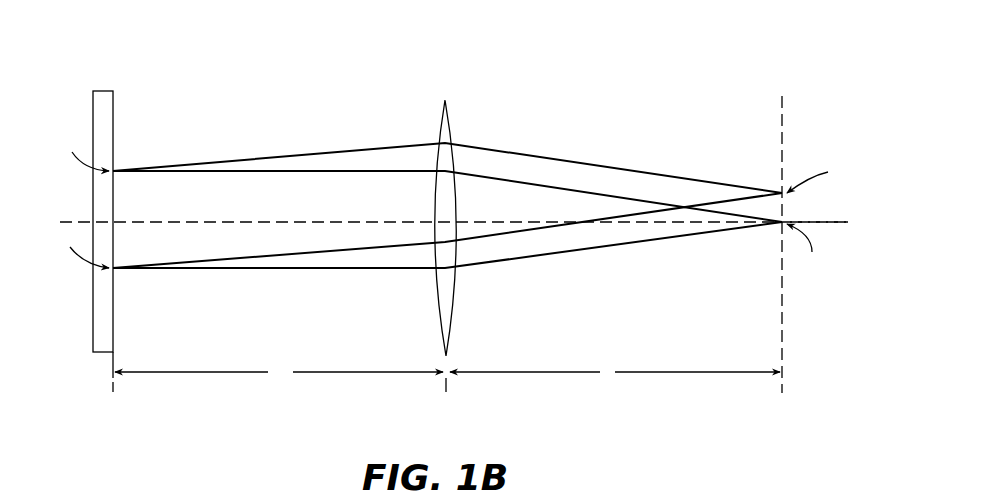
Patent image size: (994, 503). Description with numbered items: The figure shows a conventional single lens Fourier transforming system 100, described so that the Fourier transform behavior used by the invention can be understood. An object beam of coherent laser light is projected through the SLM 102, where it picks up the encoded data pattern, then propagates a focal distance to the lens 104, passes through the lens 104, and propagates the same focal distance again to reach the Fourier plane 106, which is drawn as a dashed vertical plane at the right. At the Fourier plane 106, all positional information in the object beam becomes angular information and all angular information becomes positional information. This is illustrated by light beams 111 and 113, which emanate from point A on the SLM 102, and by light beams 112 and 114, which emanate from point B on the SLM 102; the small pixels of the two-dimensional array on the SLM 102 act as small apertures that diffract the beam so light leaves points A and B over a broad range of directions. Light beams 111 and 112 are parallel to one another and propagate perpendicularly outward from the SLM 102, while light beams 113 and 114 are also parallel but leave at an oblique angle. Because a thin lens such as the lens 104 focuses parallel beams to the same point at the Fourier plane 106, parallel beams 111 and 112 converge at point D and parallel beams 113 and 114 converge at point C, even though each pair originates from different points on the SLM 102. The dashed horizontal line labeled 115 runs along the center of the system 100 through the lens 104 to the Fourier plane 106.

The single lens Fourier transforming system 100 is at (166, 403).
The SLM 102 is at (103, 89).
The lens 104 is at (445, 98).
The Fourier plane 106 is at (782, 94).
The light beam 111 is at (211, 176).
The light beam 112 is at (313, 275).
The light beam 113 is at (283, 146).
The light beam 114 is at (207, 259).
The optical axis 115 is at (846, 228).